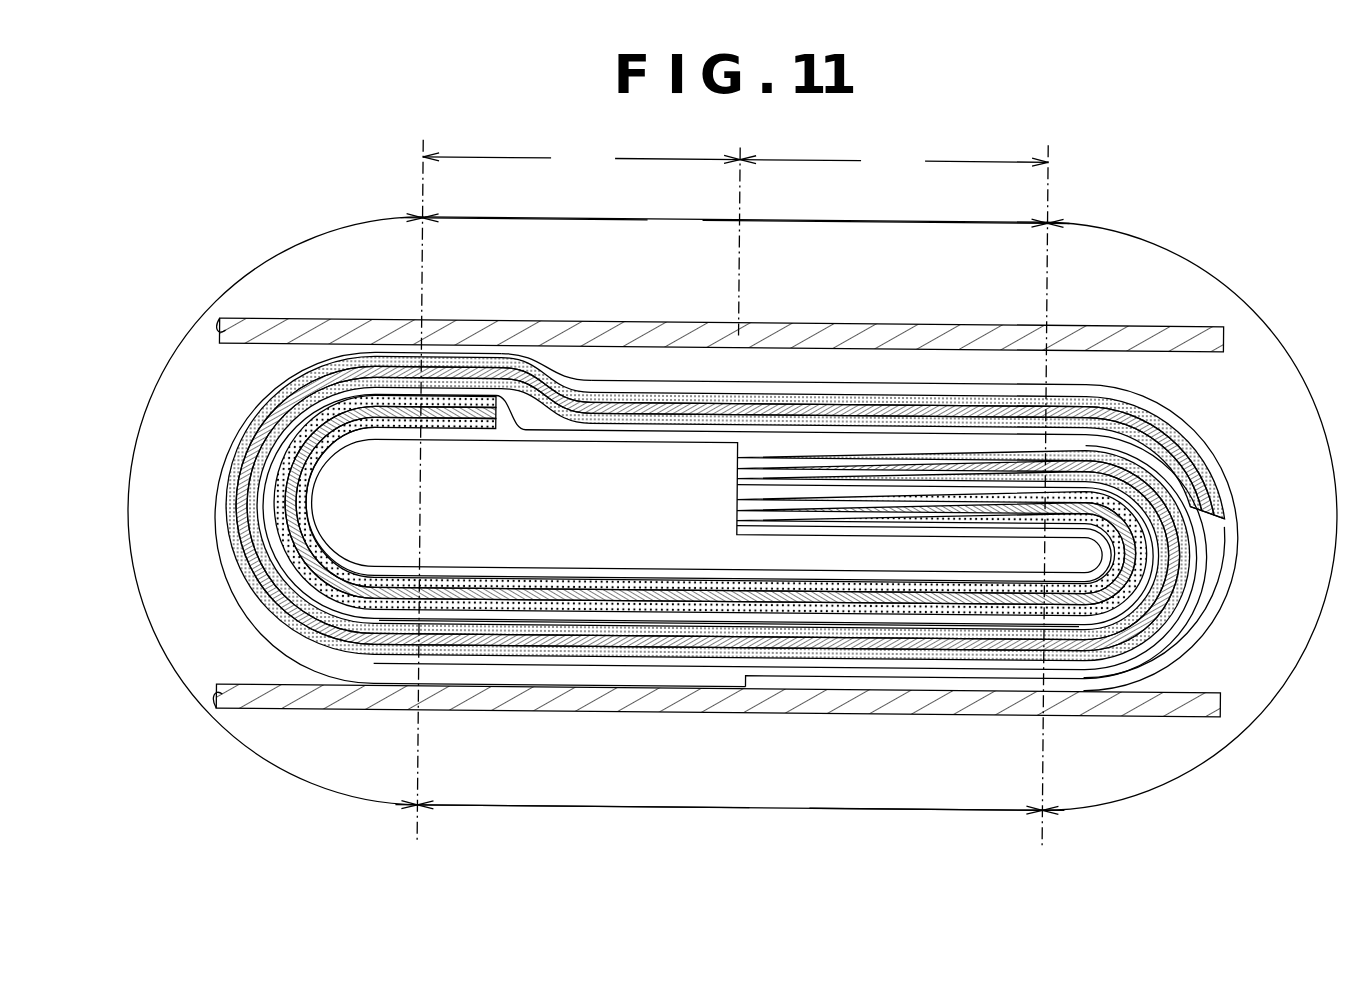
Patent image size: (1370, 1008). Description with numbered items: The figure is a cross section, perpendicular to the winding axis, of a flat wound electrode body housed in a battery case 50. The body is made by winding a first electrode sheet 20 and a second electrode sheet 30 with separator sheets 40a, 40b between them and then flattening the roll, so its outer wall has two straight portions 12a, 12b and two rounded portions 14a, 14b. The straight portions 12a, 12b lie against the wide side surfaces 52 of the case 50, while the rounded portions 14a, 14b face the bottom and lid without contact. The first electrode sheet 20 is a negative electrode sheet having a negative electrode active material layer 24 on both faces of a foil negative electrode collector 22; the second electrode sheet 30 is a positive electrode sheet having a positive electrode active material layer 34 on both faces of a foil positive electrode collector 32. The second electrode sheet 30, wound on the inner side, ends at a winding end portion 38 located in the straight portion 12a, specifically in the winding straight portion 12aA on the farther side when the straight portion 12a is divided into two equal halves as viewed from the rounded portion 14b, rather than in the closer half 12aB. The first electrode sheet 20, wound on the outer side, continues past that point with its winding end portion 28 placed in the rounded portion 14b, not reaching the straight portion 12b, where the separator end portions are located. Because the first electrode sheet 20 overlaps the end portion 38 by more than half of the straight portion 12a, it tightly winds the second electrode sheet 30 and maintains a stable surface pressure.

The straight portion 12a is at (734, 221).
The winding straight portion on the farther side 12aA is at (578, 491).
The straight portion on the closer side 12aB is at (891, 494).
The straight portion 12b is at (729, 808).
The rounded portion 14a is at (262, 509).
The rounded portion 14b is at (1201, 517).
The first electrode sheet 20 is at (725, 520).
The negative electrode collector 22 is at (880, 405).
The negative electrode active material layer 24 is at (852, 392).
The winding end portion 28 is at (1225, 512).
The second electrode sheet 30 is at (710, 593).
The positive electrode collector 32 is at (875, 593).
The positive electrode active material layer 34 is at (835, 607).
The winding end portion 38 is at (548, 372).
The separator sheet 40a is at (965, 380).
The separator sheet 40b is at (920, 432).
The battery case 50 is at (240, 322).
The wide side surface 52 is at (300, 350).